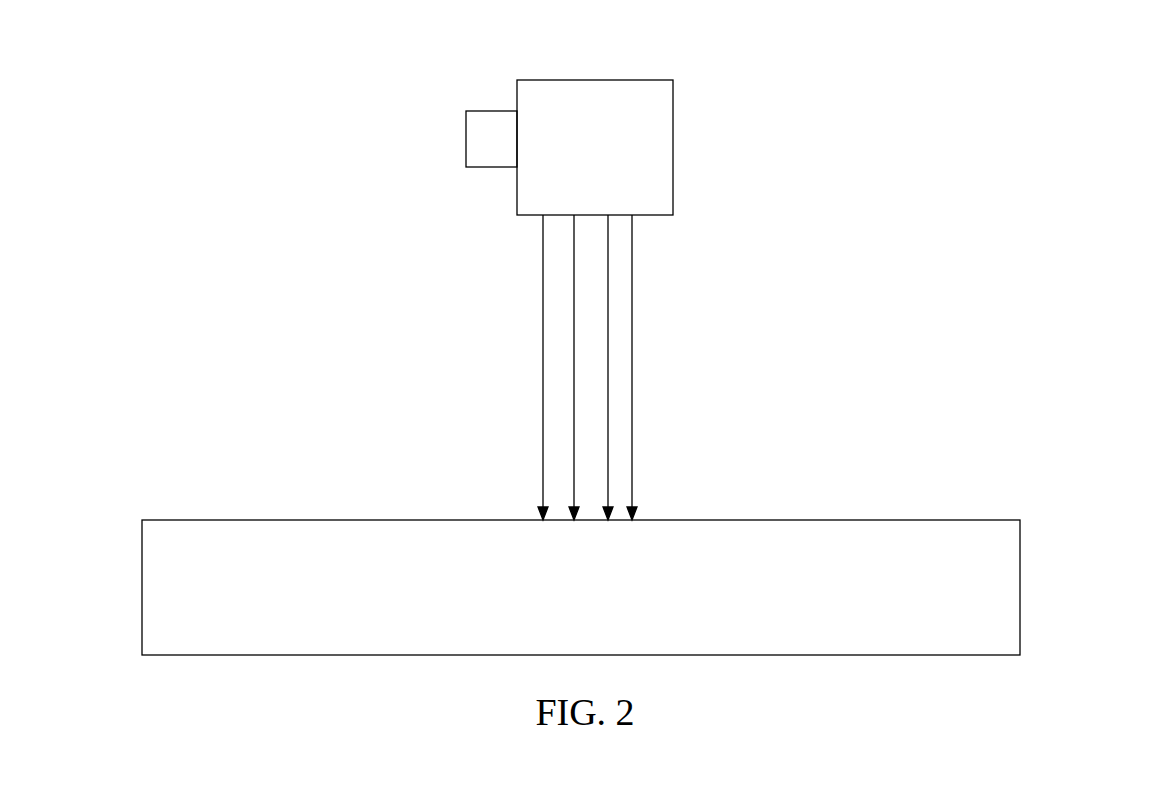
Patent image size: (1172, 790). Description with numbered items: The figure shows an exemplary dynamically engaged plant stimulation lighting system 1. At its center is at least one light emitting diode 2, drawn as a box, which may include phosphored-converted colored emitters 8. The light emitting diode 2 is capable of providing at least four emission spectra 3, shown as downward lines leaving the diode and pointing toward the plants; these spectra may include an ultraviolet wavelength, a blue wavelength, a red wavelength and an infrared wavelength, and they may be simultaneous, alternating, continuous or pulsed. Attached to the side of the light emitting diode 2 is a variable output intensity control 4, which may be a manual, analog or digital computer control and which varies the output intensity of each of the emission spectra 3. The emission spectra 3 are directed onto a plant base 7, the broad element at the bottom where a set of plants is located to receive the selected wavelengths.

The dynamically engaged plant stimulation lighting system 1 is at (967, 149).
The light emitting diode 2 is at (638, 107).
The emission spectra 3 is at (572, 367).
The variable output intensity control 4 is at (483, 130).
The plant base 7 is at (962, 587).
The phosphored-converted colored emitters 8 is at (595, 157).